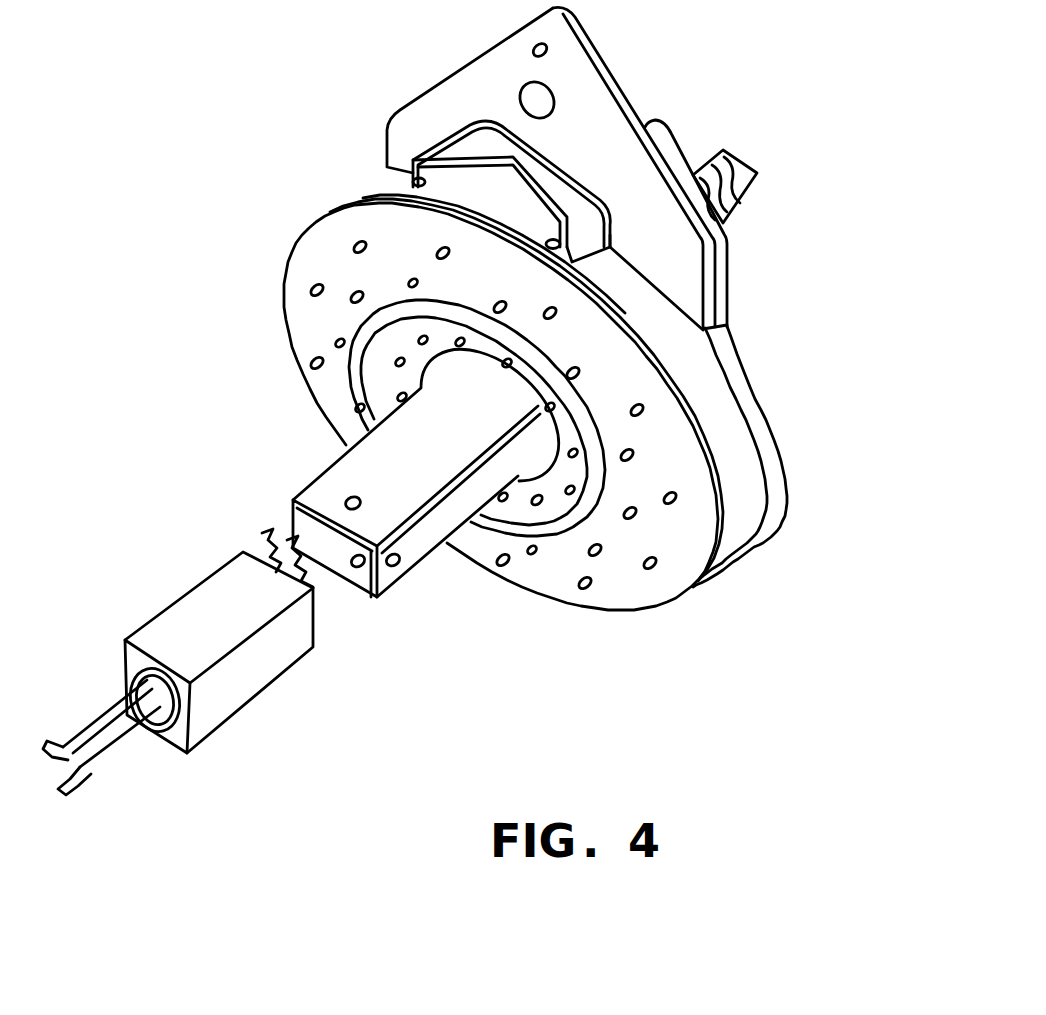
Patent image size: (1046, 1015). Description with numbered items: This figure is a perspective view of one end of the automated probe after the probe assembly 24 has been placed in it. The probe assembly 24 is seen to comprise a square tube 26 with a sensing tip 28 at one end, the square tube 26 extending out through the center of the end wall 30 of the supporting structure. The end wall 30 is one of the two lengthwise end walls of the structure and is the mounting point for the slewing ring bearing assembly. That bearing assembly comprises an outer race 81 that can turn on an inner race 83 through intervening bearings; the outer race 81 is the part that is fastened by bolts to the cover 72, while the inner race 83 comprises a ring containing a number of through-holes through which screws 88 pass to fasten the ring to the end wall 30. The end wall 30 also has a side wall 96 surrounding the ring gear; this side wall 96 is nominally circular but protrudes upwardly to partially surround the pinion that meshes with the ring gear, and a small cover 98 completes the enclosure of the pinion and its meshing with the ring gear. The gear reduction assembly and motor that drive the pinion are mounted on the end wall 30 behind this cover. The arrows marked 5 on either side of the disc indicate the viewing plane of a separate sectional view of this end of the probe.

The section line 5- 5 is at (283, 337).
The probe assembly 24 is at (367, 505).
The square tube 26 is at (302, 487).
The sensing tip 28 is at (187, 583).
The end wall 30 is at (584, 402).
The cover 72 is at (670, 457).
The outer race 81 is at (535, 536).
The inner race 83 is at (578, 505).
The screws 88 is at (424, 337).
The side wall 96 is at (713, 398).
The small cover 98 is at (503, 200).